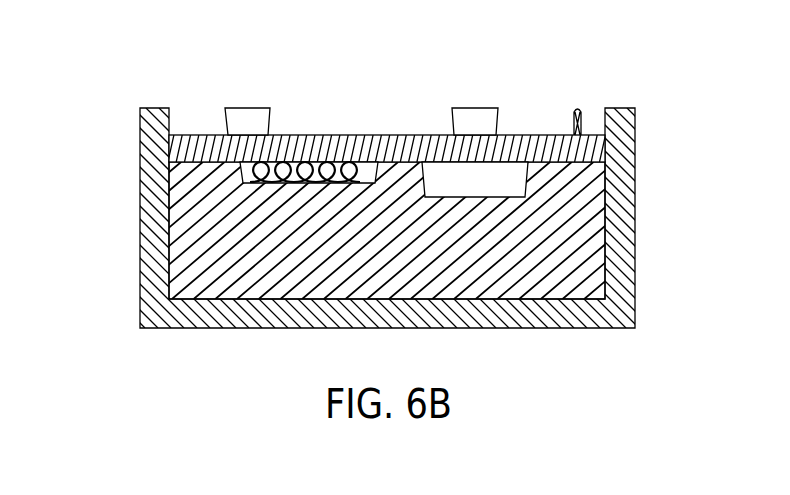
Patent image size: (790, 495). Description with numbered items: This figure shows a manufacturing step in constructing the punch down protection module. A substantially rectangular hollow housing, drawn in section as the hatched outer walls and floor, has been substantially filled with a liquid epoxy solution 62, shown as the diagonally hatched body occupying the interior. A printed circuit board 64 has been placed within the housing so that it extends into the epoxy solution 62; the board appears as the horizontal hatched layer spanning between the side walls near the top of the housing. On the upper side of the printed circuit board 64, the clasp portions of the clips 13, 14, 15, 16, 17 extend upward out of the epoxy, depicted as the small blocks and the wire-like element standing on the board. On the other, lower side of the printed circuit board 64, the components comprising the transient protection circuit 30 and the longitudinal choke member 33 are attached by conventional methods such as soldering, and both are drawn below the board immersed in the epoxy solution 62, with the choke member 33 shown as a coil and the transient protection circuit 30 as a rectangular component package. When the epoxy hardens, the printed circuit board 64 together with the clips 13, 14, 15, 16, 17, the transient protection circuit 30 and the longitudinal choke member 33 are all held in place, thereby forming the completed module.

The clip 13 is at (203, 89).
The clip 14 is at (260, 113).
The clip 15 is at (426, 89).
The clip 16 is at (478, 113).
The clip 17 is at (578, 108).
The transient protection circuit 30 is at (513, 198).
The longitudinal choke member 33 is at (293, 183).
The liquid epoxy solution 62 is at (195, 188).
The printed circuit board 64 is at (537, 163).